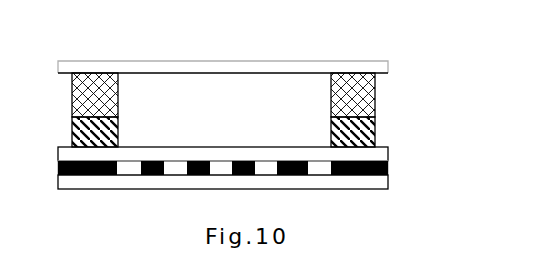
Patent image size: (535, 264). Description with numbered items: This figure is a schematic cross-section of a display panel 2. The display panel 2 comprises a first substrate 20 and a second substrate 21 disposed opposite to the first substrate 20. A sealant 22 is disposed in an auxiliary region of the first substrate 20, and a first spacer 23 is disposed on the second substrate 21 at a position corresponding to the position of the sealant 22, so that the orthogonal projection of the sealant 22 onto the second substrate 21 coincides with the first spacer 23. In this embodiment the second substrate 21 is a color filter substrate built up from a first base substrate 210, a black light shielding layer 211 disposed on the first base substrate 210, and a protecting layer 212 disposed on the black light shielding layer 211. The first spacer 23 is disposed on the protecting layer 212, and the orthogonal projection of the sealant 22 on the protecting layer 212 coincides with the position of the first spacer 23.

The display panel 2 is at (42, 50).
The first substrate 20 is at (377, 69).
The second substrate 21 is at (262, 167).
The sealant 22 is at (375, 102).
The first spacer 23 is at (360, 128).
The first base substrate 210 is at (377, 182).
The black light shielding layer 211 is at (389, 166).
The protecting layer 212 is at (377, 152).